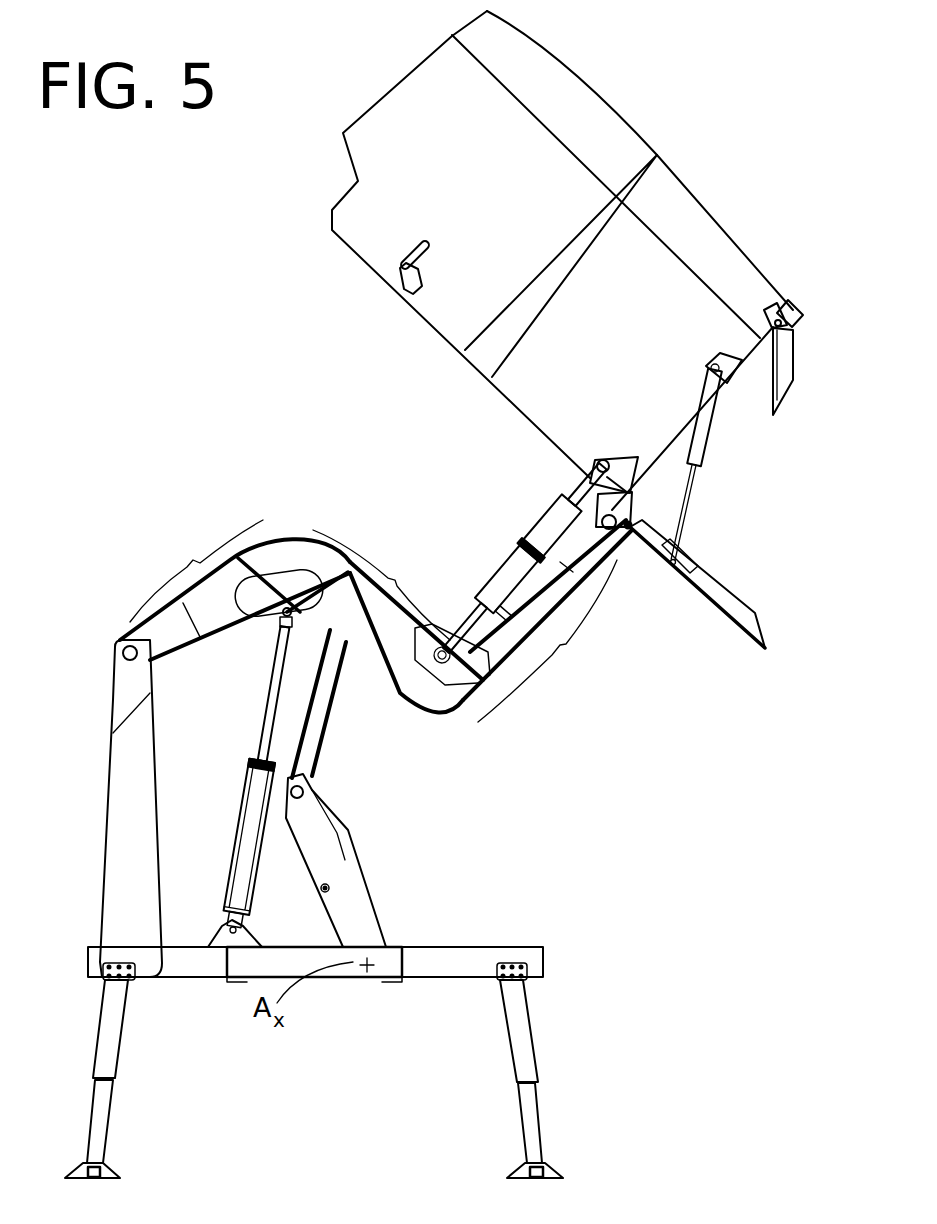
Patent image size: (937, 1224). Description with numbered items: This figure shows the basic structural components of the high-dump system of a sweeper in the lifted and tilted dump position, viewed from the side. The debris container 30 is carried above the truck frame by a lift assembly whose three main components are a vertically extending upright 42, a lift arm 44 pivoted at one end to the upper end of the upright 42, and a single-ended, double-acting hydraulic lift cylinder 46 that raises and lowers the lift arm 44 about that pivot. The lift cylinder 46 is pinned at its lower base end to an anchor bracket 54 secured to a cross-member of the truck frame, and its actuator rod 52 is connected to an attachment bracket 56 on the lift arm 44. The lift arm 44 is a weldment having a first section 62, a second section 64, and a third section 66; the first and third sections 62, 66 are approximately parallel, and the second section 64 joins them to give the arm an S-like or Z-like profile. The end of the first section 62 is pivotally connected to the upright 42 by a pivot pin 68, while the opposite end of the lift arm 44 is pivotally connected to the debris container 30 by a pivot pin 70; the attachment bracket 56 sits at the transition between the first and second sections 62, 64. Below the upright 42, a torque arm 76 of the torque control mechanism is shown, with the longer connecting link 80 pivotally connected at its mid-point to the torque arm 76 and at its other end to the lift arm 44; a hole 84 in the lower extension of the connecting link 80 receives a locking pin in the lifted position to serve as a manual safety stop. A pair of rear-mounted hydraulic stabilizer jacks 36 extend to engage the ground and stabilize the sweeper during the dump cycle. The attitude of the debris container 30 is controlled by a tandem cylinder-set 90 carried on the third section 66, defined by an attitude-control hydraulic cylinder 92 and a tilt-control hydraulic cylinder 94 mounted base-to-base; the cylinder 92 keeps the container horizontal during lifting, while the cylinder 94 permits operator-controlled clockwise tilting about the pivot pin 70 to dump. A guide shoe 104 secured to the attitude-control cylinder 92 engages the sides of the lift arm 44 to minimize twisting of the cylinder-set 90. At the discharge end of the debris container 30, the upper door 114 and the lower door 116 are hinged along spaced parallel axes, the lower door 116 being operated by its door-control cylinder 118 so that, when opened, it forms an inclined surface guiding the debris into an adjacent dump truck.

The debris container 30 is at (685, 177).
The hydraulic stabilizer jacks 36 is at (92, 1107).
The upright 42 is at (152, 893).
The lift arm 44 is at (376, 541).
The hydraulic lift cylinder 46 is at (230, 860).
The actuator rod 52 is at (263, 712).
The anchor bracket 54 is at (212, 938).
The attachment bracket 56 is at (277, 617).
The first section 62 is at (235, 590).
The second section 64 is at (398, 621).
The third section 66 is at (547, 621).
The pivot pin 68 is at (118, 647).
The pivot pin 70 is at (612, 532).
The torque arm 76 is at (365, 922).
The connecting link 80 is at (328, 722).
The hole 84 is at (330, 886).
The tandem cylinder-set 90 is at (520, 602).
The attitude-control hydraulic cylinder 92 is at (487, 602).
The tilt-control hydraulic cylinder 94 is at (552, 524).
The guide shoe 104 is at (545, 677).
The upper door 114 is at (798, 378).
The lower door 116 is at (743, 593).
The door-control cylinder 118 is at (697, 433).